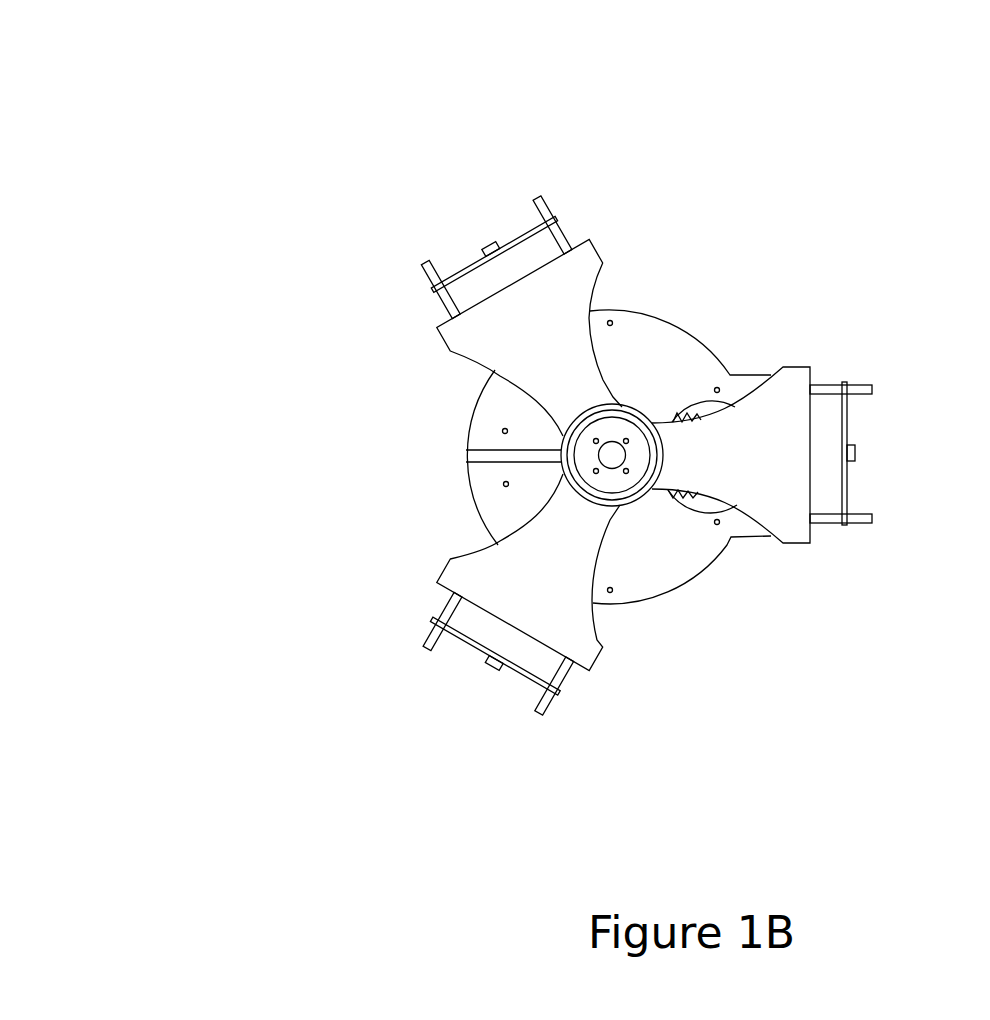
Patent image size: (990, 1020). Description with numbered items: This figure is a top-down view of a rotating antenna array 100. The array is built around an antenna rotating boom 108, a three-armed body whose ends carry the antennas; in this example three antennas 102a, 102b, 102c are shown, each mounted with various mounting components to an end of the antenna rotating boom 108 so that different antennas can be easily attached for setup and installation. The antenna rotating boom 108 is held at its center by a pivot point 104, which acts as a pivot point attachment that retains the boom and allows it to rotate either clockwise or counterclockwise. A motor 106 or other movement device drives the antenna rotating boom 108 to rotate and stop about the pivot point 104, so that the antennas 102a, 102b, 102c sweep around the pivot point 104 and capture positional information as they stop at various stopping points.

The rotating antenna array 100 is at (63, 92).
The antenna 102a is at (489, 246).
The antenna 102b is at (855, 455).
The antenna 102c is at (492, 670).
The pivot point 104 is at (602, 443).
The motor 106 is at (694, 418).
The antenna rotating boom 108 is at (565, 572).